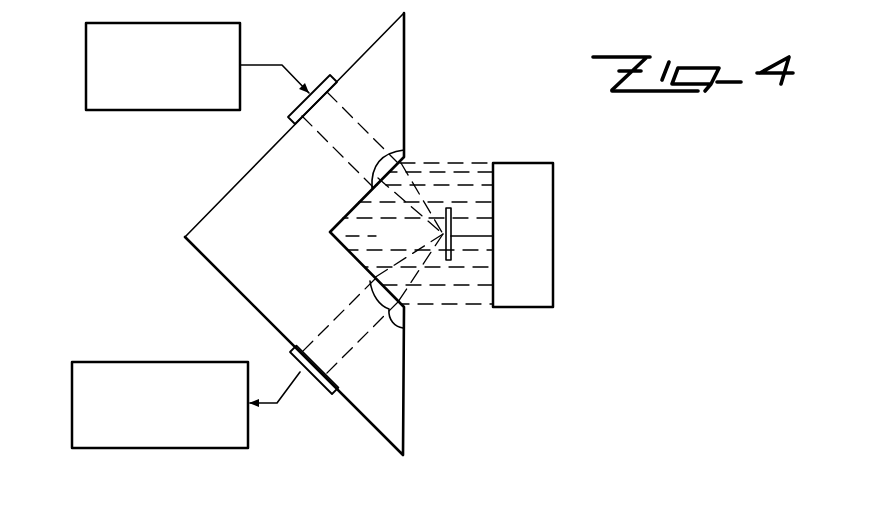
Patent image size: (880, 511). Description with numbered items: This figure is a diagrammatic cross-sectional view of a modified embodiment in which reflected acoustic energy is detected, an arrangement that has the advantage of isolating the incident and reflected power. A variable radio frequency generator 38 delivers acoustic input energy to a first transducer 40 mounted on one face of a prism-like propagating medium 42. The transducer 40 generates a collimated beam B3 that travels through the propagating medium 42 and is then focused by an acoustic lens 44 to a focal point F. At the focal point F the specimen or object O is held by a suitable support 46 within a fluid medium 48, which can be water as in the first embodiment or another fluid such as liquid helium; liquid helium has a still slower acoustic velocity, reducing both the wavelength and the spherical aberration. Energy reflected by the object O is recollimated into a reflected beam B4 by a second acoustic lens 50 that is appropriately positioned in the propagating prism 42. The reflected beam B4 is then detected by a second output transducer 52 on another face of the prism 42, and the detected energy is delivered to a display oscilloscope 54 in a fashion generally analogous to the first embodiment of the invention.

The variable radio frequency generator 38 is at (88, 64).
The first transducer 40 is at (325, 76).
The prism-like propagating medium 42 is at (242, 190).
The acoustic lens 44 is at (401, 154).
The support 46 is at (553, 236).
The fluid medium 48 is at (447, 306).
The second acoustic lens 50 is at (404, 322).
The second output transducer 52 is at (331, 393).
The display oscilloscope 54 is at (74, 402).
The collimated beam B3 is at (325, 136).
The reflected beam B4 is at (358, 302).
The focal point F is at (441, 236).
The object O is at (452, 216).